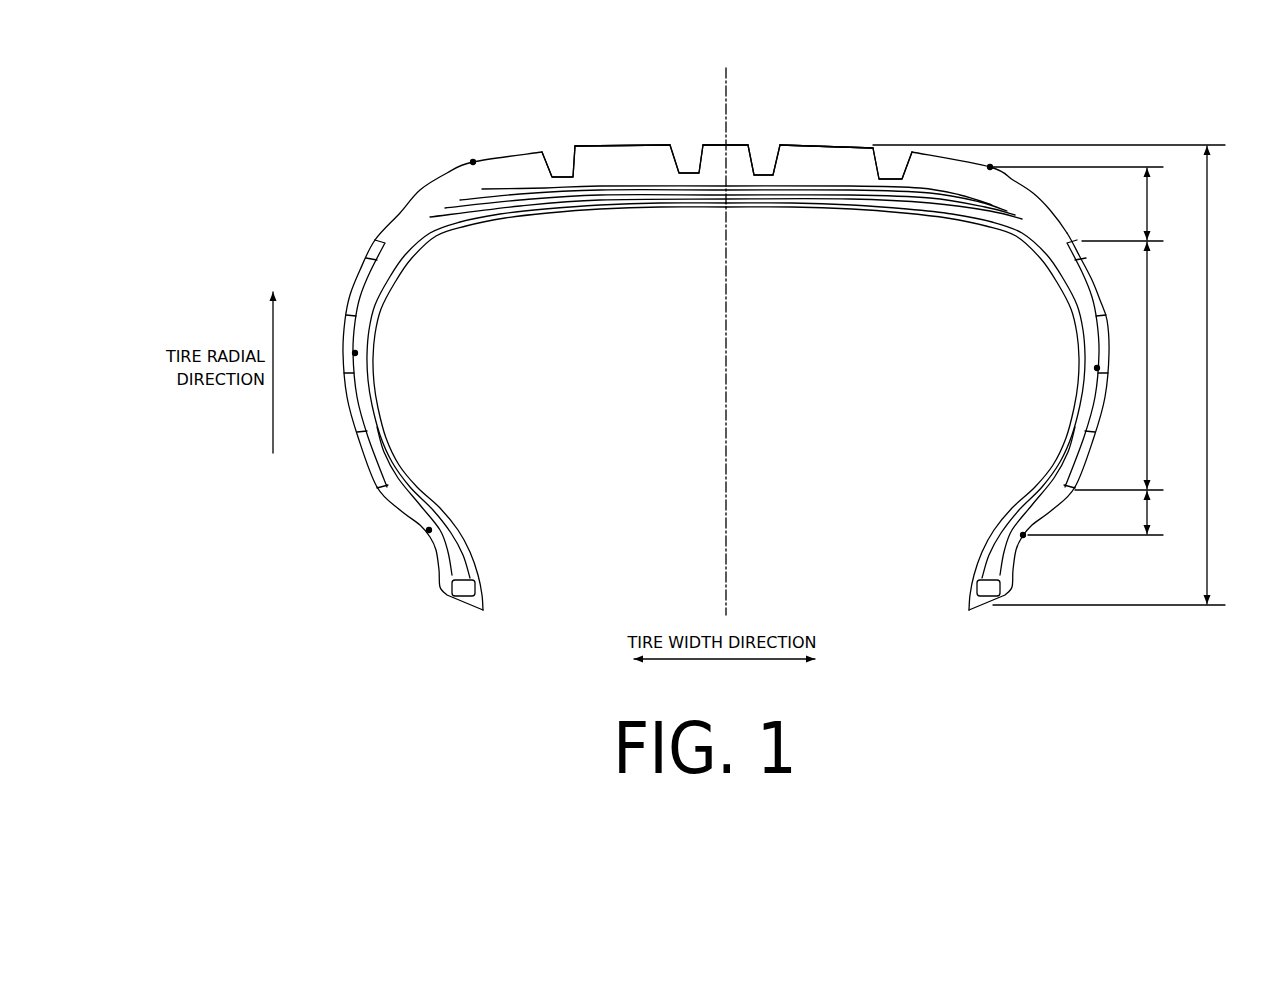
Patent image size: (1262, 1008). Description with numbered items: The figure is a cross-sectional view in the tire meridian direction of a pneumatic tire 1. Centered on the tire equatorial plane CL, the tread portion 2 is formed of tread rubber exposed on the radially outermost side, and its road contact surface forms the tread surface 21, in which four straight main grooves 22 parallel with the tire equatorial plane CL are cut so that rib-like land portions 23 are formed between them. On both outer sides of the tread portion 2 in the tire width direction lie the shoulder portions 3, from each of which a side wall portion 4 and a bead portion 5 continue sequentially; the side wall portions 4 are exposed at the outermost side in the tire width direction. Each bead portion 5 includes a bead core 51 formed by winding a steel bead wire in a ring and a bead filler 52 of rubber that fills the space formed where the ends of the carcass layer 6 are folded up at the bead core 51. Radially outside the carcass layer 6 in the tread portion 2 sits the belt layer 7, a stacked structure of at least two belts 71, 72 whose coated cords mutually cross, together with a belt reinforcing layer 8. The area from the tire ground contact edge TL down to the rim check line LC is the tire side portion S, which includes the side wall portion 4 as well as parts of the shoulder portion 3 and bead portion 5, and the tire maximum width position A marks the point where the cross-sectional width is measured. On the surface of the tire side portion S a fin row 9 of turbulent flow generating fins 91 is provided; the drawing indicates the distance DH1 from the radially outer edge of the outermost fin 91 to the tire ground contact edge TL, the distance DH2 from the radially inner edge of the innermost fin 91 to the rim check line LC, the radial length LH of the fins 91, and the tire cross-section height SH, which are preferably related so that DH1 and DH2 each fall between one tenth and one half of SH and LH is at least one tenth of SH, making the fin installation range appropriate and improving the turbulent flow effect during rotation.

The pneumatic tire 1 is at (970, 85).
The tread portion 2 is at (637, 142).
The tread surface 21 is at (652, 142).
The main groove 22 is at (560, 157).
The land portion 23 is at (520, 157).
The shoulder portion 3 is at (420, 182).
The side wall portion 4 is at (355, 230).
The bead portion 5 is at (428, 571).
The bead core 51 is at (465, 589).
The bead filler 52 is at (460, 549).
The carcass layer 6 is at (1030, 238).
The belt layer 7 is at (965, 262).
The belt 71 is at (975, 197).
The belt 72 is at (928, 194).
The belt reinforcing layer 8 is at (453, 200).
The fin row 9 is at (312, 267).
The turbulent flow generating fin 91 is at (350, 286).
The tire ground contact edge TL is at (473, 162).
The tire side portion S is at (378, 193).
The tire maximum width position A is at (357, 353).
The rim check line LC is at (427, 531).
The tire equatorial plane CL is at (726, 330).
The tire cross-section height SH is at (1053, 375).
The length of fins in tire radial direction LH is at (1161, 365).
The distance from outermost fin edge to tire ground contact edge DH1 is at (1089, 204).
The distance from innermost fin edge to rim check line DH2 is at (1108, 512).